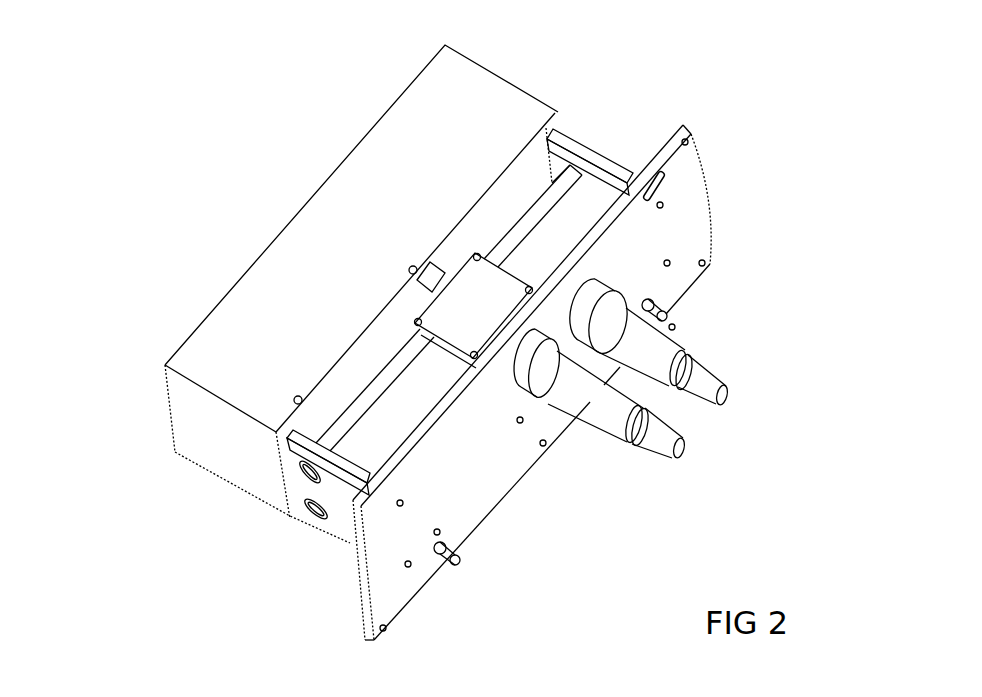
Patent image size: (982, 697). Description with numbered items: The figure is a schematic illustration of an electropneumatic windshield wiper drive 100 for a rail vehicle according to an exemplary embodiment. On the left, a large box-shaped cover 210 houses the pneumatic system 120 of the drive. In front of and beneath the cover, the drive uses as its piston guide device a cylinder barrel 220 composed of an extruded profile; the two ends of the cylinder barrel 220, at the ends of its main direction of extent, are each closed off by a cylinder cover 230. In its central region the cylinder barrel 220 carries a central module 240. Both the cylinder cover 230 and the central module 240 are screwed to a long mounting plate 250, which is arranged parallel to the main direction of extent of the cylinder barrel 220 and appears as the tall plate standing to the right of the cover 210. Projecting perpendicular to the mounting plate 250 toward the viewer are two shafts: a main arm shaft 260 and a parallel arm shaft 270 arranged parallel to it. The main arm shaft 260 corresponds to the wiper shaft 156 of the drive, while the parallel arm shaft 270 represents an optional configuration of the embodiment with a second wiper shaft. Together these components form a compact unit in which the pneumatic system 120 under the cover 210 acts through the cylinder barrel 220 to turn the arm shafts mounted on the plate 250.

The electropneumatic windshield wiper drive 100 is at (140, 88).
The pneumatic system 120 is at (520, 68).
The wiper shaft 156 is at (737, 437).
The cover 210 is at (397, 197).
The cylinder barrel 220 is at (362, 437).
The cylinder cover 230 is at (600, 150).
The central module 240 is at (482, 333).
The mounting plate 250 is at (702, 208).
The main arm shaft 260 is at (603, 437).
The parallel arm shaft 270 is at (688, 348).